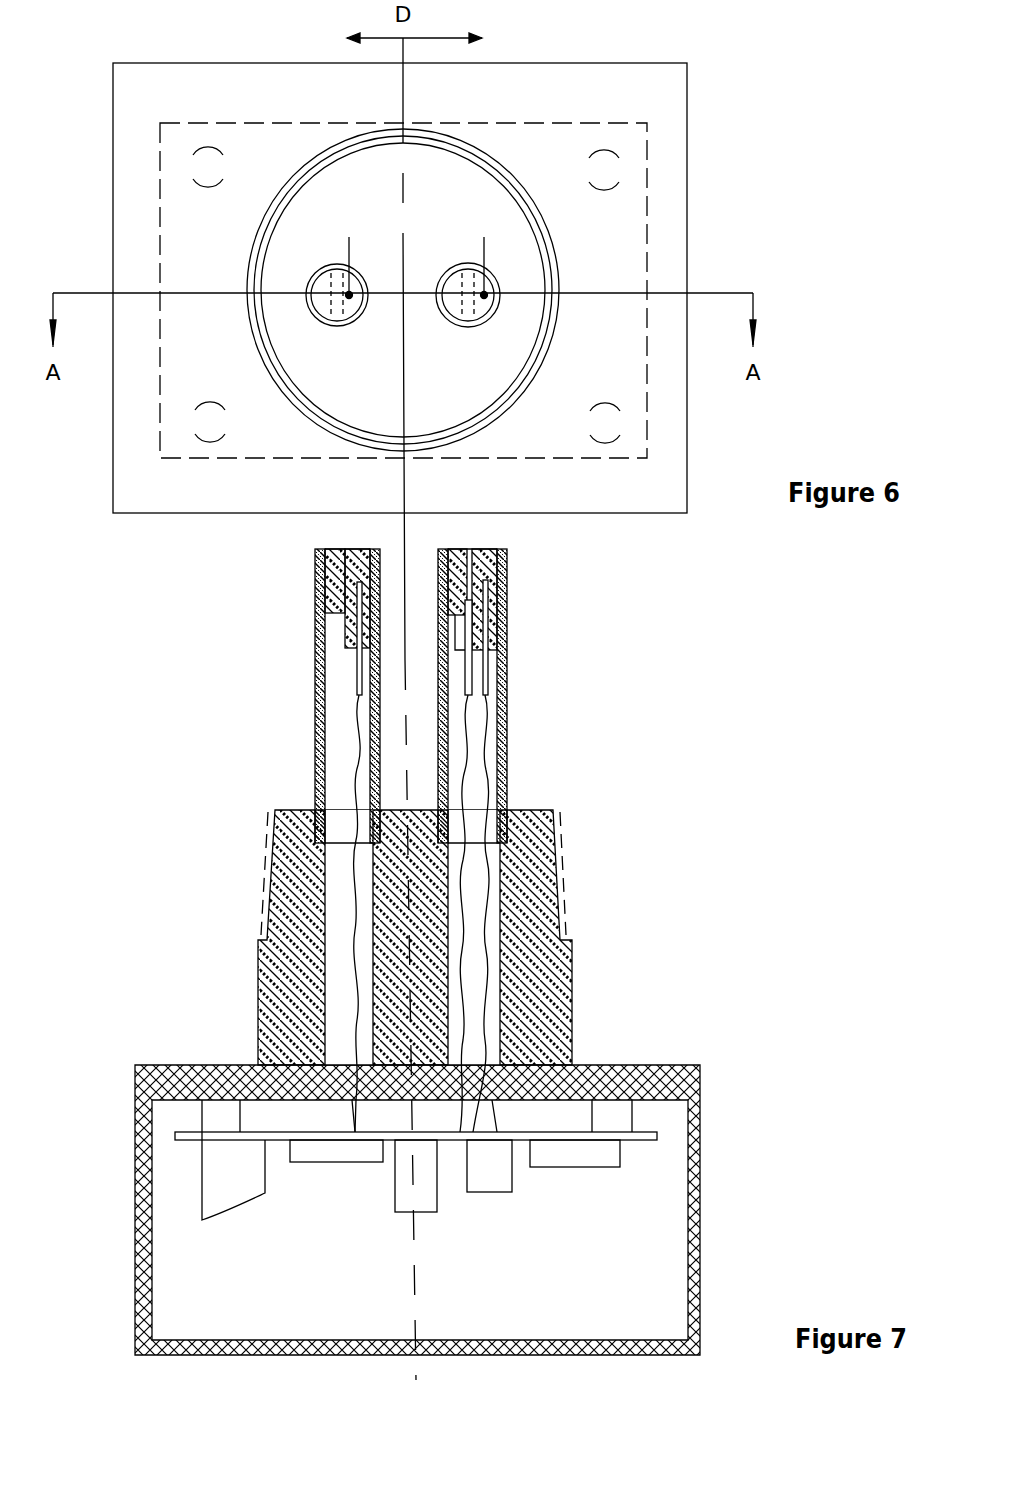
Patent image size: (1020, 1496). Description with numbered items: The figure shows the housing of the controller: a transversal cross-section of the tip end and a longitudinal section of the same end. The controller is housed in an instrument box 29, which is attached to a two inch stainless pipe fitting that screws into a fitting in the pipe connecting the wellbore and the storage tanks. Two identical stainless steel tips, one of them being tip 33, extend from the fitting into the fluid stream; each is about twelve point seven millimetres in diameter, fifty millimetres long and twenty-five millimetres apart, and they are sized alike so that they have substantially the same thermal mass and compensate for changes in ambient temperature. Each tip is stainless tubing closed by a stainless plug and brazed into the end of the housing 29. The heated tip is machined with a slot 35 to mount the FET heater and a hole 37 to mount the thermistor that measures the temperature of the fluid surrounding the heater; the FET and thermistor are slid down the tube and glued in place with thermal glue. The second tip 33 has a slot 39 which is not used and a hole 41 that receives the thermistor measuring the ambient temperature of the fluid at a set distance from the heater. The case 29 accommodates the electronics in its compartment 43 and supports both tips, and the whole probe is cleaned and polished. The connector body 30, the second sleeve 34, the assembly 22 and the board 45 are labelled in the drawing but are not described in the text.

In FIG. 7, the sensor assembly 22 is at (178, 917).
In FIG. 6, the instrument box 29 is at (143, 503).
In FIG. 7, the instrument box 29 is at (135, 1215).
In FIG. 6, the connector body 30 is at (622, 387).
In FIG. 7, the connector body 30 is at (572, 958).
In FIG. 7, the tip 33 is at (340, 732).
In FIG. 7, the second tubular sleeve 34 is at (488, 737).
In FIG. 6, the slot 35 is at (308, 272).
In FIG. 7, the slot 35 is at (463, 640).
In FIG. 6, the hole 37 is at (349, 245).
In FIG. 7, the hole 37 is at (497, 602).
In FIG. 6, the slot 39 is at (473, 311).
In FIG. 7, the slot 39 is at (323, 601).
In FIG. 6, the hole 41 is at (486, 272).
In FIG. 7, the hole 41 is at (347, 627).
In FIG. 7, the compartment 43 is at (662, 1212).
In FIG. 7, the circuit board 45 is at (657, 1133).